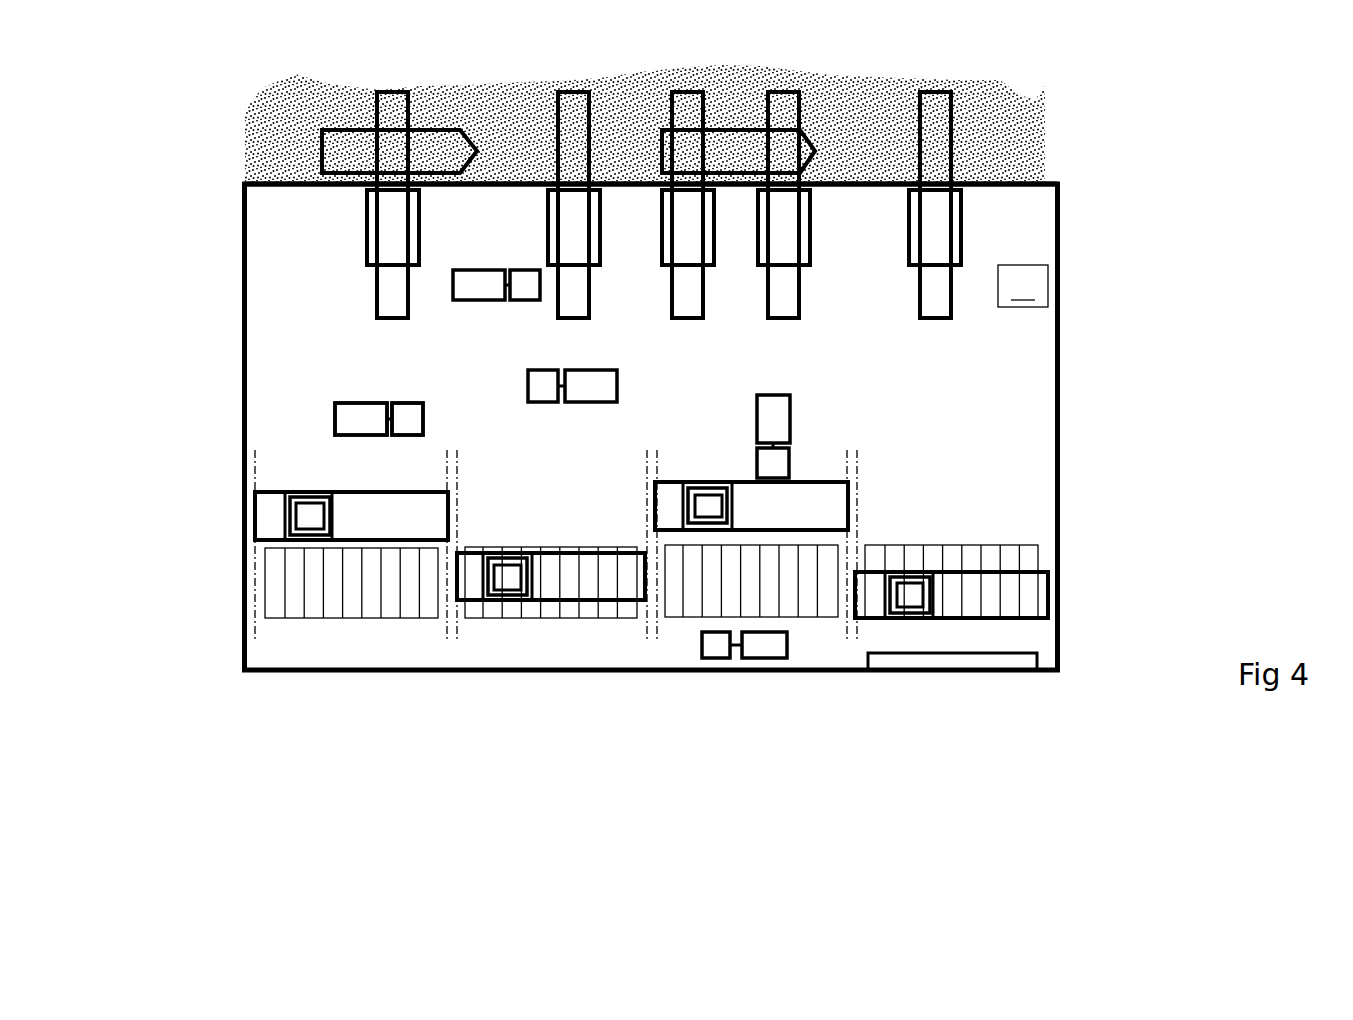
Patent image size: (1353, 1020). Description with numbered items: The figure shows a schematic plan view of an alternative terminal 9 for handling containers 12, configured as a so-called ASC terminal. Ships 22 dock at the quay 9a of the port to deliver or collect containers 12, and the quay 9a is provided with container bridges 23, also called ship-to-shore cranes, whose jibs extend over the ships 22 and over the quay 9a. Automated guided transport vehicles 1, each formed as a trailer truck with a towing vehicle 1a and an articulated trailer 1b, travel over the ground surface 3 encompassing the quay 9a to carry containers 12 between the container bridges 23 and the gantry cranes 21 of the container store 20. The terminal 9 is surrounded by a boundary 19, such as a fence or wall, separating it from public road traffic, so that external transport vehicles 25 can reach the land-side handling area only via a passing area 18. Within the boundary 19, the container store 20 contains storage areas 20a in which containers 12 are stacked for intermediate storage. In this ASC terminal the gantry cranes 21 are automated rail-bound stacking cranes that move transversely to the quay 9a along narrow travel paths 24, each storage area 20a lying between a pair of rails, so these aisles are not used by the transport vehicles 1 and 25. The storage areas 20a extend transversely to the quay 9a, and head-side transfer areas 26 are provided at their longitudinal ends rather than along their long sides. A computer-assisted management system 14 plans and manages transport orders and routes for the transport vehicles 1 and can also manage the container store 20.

The transport vehicle 1 is at (482, 272).
The towing vehicle 1a is at (408, 415).
The trailer 1b is at (368, 410).
The ground surface 3 is at (952, 367).
The terminal 9 is at (203, 262).
The quay 9a is at (340, 193).
The container 12 is at (478, 283).
The management system 14 is at (1023, 286).
The passing area 18 is at (945, 660).
The boundary 19 is at (1067, 292).
The container store 20 is at (322, 568).
The storage area 20a is at (310, 598).
The gantry crane 21 is at (310, 517).
The ship 22 is at (737, 147).
The container bridge 23 is at (395, 250).
The travel path 24 is at (440, 635).
The external transport vehicle 25 is at (762, 645).
The transfer area 26 is at (740, 470).